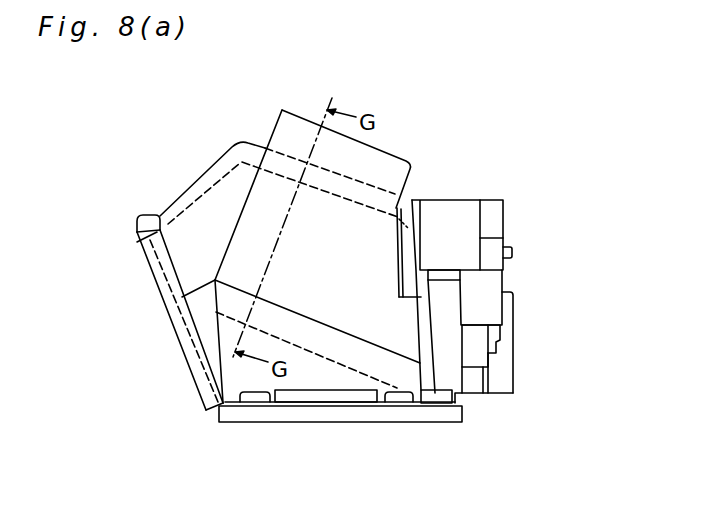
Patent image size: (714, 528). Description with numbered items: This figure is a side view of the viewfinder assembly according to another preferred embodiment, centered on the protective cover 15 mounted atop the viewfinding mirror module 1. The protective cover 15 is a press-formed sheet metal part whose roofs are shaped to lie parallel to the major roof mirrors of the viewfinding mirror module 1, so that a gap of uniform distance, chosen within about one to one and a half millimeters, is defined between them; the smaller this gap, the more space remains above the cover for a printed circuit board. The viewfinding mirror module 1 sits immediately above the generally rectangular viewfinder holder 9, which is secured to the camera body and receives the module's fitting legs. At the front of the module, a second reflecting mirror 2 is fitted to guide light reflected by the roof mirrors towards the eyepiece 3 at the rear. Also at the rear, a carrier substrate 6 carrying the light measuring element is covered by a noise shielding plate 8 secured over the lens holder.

The viewfinding mirror module 1 is at (231, 157).
The second reflecting mirror 2 is at (168, 307).
The eyepiece 3 is at (510, 382).
The carrier substrate 6 is at (495, 293).
The noise shielding plate 8 is at (465, 210).
The viewfinder holder 9 is at (462, 411).
The protective cover 15 is at (388, 163).